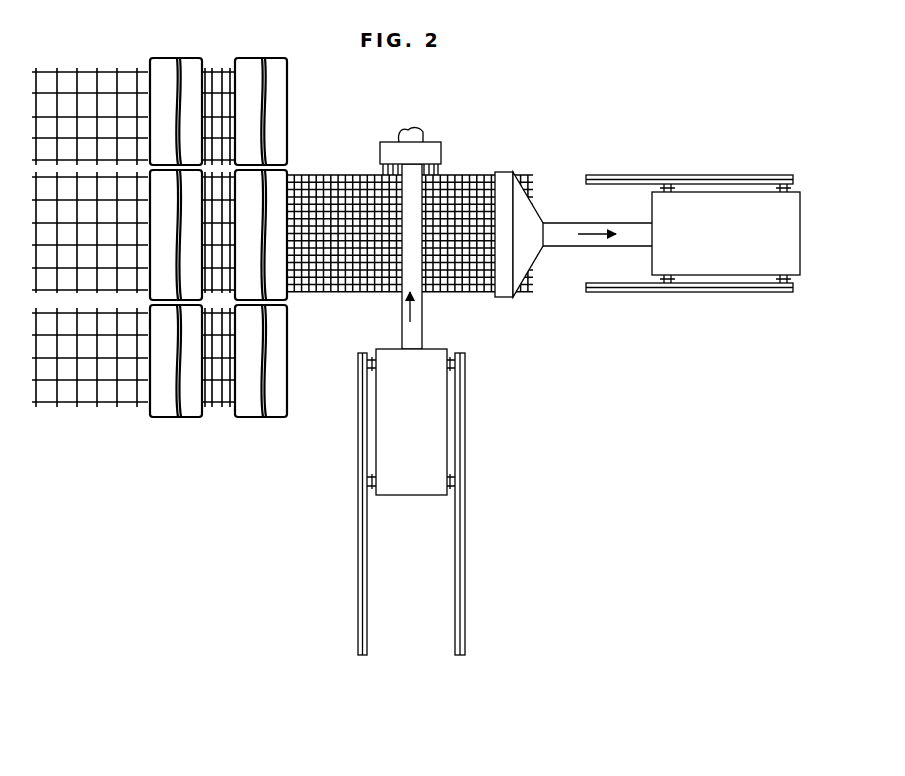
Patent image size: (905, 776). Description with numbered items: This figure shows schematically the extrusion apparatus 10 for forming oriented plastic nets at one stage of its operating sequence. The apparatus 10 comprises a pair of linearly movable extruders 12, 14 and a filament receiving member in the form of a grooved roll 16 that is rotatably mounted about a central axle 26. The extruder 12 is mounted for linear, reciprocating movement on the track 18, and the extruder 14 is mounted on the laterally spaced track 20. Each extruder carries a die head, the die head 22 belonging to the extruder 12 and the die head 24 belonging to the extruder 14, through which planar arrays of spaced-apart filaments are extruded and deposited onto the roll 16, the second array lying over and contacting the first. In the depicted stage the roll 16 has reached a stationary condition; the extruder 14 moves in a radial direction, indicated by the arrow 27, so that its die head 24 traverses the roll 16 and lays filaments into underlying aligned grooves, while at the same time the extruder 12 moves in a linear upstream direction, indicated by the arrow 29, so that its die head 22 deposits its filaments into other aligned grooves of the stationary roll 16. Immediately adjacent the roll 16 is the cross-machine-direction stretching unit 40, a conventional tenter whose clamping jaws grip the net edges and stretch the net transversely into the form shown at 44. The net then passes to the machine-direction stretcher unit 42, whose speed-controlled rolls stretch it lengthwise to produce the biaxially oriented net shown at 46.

The extrusion apparatus 10 is at (560, 160).
The extruder 12 is at (750, 278).
The extruder 14 is at (409, 498).
The filament receiving member 16 is at (329, 172).
The track 18 is at (672, 292).
The track 20 is at (668, 177).
The die head 22 is at (513, 273).
The die head 24 is at (441, 152).
The central axle 26 is at (423, 128).
The arrow 27 is at (403, 316).
The arrow 29 is at (590, 234).
The cross-machine-direction stretching unit 40 is at (271, 418).
The machine-direction stretcher unit 42 is at (164, 418).
The transversely stretched net 44 is at (218, 66).
The biaxially oriented net 46 is at (104, 66).